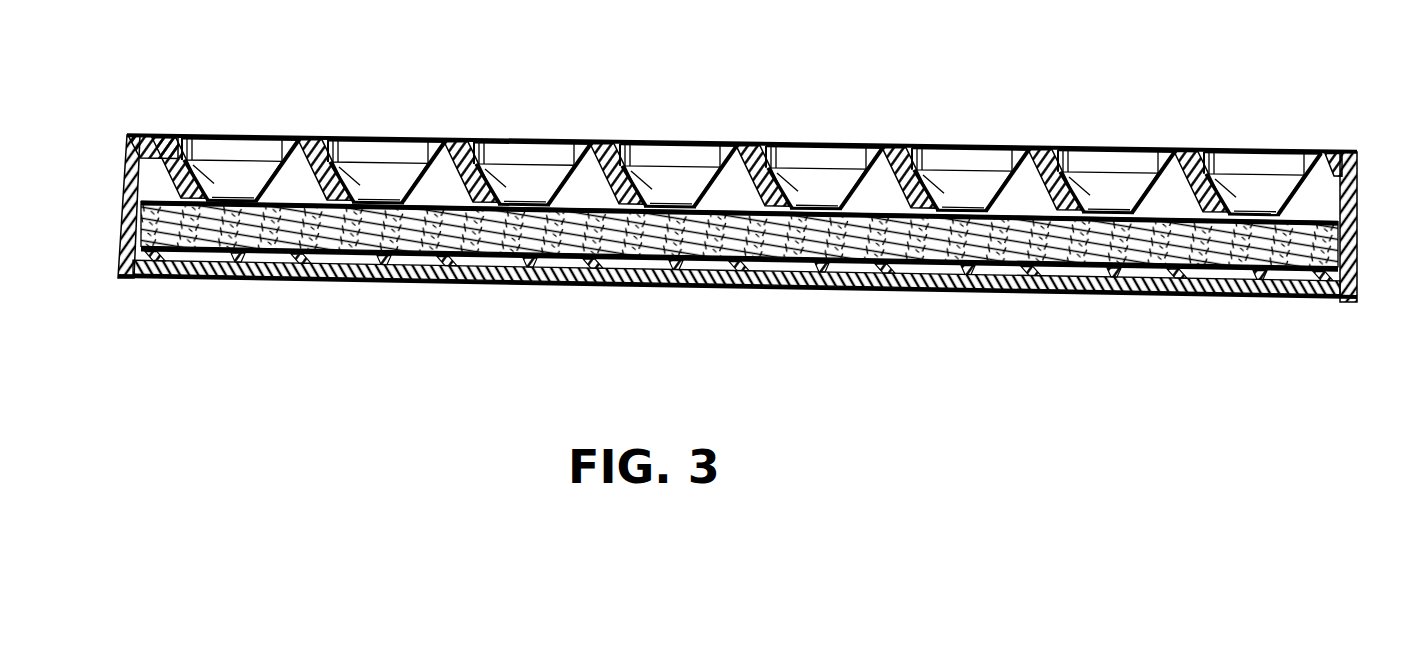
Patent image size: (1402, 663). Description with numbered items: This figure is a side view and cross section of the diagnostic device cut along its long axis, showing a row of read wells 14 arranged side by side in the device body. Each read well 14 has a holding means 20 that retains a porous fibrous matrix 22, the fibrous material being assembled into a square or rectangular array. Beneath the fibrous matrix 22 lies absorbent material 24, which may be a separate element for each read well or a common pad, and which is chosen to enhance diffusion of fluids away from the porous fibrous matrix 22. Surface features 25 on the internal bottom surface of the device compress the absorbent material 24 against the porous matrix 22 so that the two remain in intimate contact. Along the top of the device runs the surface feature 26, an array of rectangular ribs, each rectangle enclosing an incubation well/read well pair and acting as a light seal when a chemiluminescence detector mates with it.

The read well 14 is at (246, 144).
The holding means 20 is at (170, 182).
The porous fibrous matrix 22 is at (122, 249).
The absorbent material element 24 is at (276, 233).
The surface features 25 is at (432, 275).
The surface feature 26 is at (163, 131).